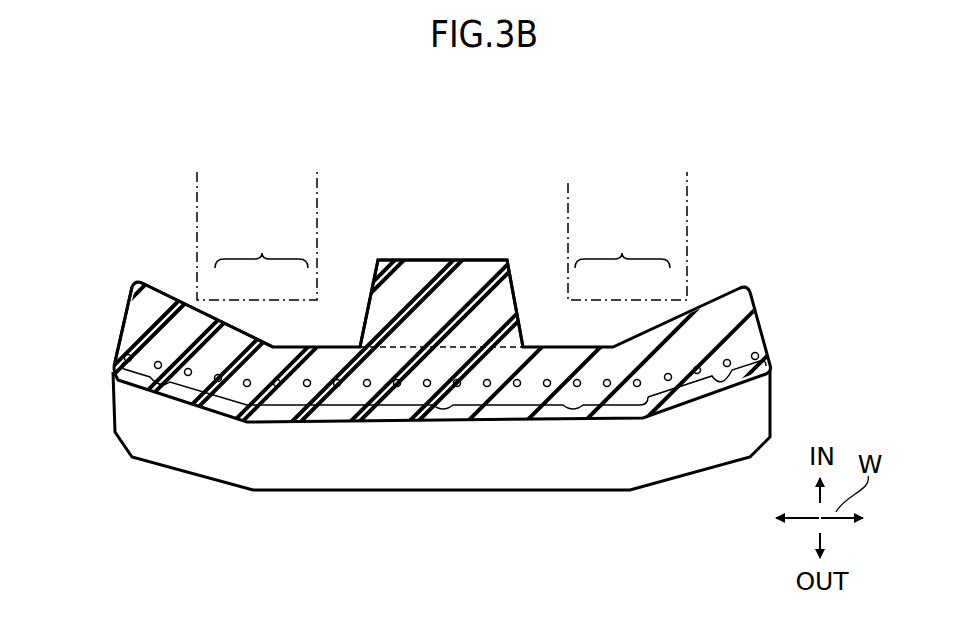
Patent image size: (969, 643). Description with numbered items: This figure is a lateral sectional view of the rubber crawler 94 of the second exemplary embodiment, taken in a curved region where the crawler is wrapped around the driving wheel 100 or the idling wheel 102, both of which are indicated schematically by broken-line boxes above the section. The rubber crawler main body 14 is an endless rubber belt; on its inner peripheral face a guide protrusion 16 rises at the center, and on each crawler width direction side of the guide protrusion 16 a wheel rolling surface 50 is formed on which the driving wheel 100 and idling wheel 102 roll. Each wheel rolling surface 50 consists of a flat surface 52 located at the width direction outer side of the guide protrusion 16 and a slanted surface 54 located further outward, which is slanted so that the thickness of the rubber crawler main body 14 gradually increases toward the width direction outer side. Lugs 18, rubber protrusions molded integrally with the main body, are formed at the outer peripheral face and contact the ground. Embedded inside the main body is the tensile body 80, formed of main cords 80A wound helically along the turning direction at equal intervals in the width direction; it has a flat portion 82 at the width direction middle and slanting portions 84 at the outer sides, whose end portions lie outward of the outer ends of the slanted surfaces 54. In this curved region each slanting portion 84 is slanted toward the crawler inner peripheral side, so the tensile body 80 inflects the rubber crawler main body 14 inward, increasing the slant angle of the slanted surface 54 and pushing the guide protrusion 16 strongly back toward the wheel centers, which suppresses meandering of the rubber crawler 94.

The rubber crawler 94 is at (104, 233).
The rubber crawler main body 14 is at (118, 345).
The guide protrusions 16 is at (480, 260).
The lugs 18 is at (257, 492).
The wheel rolling surfaces 50 is at (435, 283).
The flat surface 52 is at (292, 346).
The slanted surface 54 is at (245, 328).
The tensile body 80 is at (466, 343).
The main cords 80A is at (575, 388).
The flat portion 82 is at (441, 409).
The slanting portions 84 is at (162, 390).
The driving wheel 100 is at (197, 183).
The idling wheel 102 is at (687, 183).